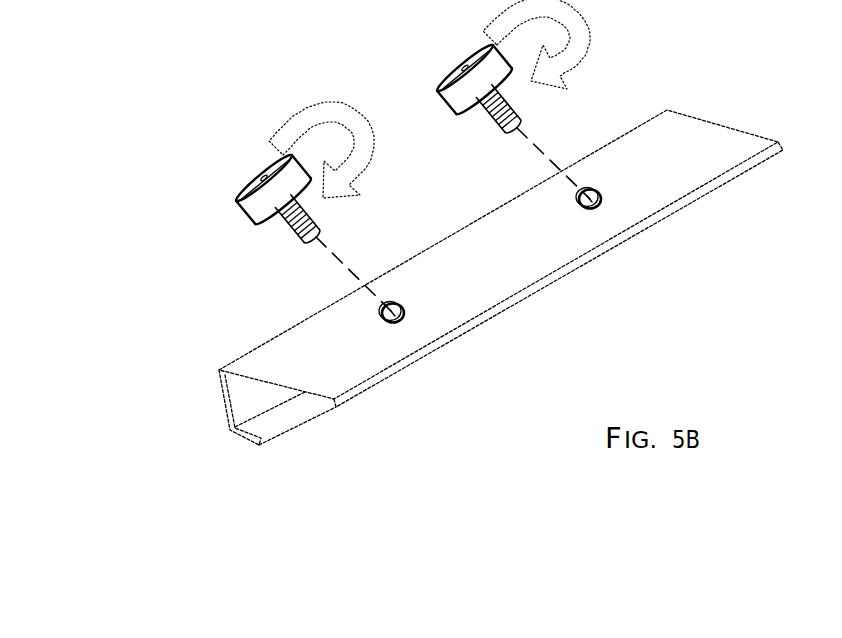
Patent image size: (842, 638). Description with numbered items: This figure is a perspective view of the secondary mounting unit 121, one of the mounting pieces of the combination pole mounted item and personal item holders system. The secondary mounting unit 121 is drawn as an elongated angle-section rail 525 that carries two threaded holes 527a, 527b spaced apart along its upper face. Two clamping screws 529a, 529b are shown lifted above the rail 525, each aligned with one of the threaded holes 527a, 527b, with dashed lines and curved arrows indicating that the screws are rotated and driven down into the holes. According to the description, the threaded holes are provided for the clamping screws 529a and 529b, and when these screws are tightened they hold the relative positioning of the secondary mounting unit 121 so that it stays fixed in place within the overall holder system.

The secondary mounting unit 121 is at (184, 278).
The mounting bracket / angle rail 525 is at (218, 407).
The mounting hole 527a is at (597, 211).
The mounting hole 527b is at (400, 324).
The clamping screw 529a is at (441, 70).
The clamping screw 529b is at (252, 181).